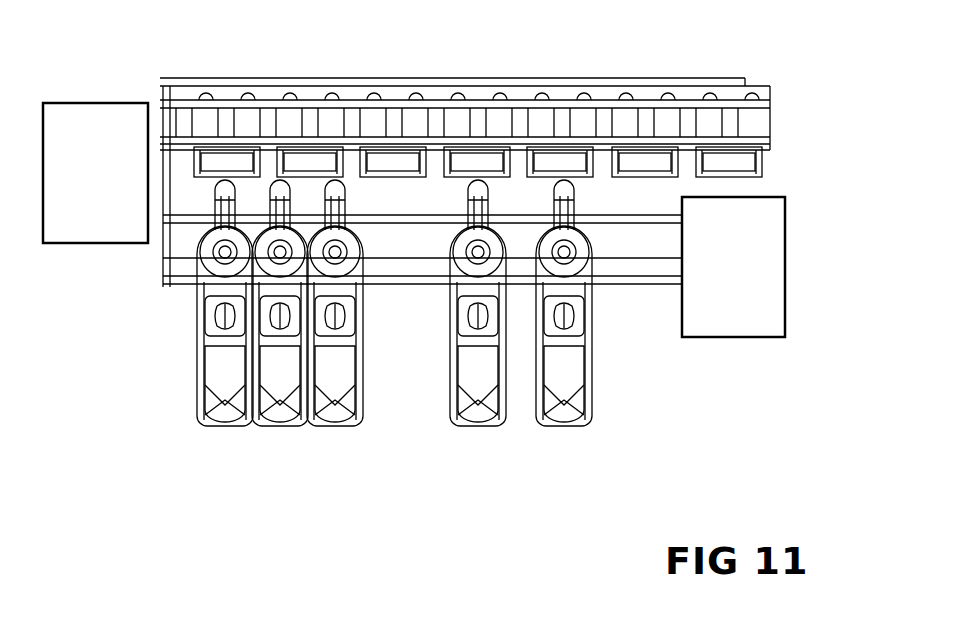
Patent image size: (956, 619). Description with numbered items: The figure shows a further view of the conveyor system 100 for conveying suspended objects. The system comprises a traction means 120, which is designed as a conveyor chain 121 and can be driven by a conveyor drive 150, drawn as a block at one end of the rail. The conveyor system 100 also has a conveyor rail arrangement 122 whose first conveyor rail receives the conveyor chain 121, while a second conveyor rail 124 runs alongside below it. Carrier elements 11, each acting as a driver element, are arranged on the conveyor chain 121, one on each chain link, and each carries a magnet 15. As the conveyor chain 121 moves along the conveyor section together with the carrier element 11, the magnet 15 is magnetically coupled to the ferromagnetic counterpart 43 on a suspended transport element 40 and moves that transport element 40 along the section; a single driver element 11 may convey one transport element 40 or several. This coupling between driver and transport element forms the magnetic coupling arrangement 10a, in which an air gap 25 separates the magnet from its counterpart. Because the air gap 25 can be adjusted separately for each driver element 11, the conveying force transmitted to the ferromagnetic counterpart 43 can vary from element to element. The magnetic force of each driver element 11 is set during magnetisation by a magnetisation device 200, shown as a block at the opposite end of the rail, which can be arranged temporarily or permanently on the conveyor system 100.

The conveyor system 100 is at (127, 58).
The conveyor drive 150 is at (110, 236).
The magnetisation device 200 is at (732, 323).
The traction means 120 is at (289, 100).
The conveyor rail arrangement 122 is at (344, 86).
The conveyor chain 121 is at (450, 110).
The second conveyor rail 124 is at (165, 268).
The carrier element 11 is at (562, 175).
The magnet 15 is at (738, 168).
The ferromagnetic counterpart 43 is at (563, 178).
The magnetic coupling arrangement 10a is at (586, 194).
The air gap 25 is at (202, 188).
The transport element 40 is at (343, 413).